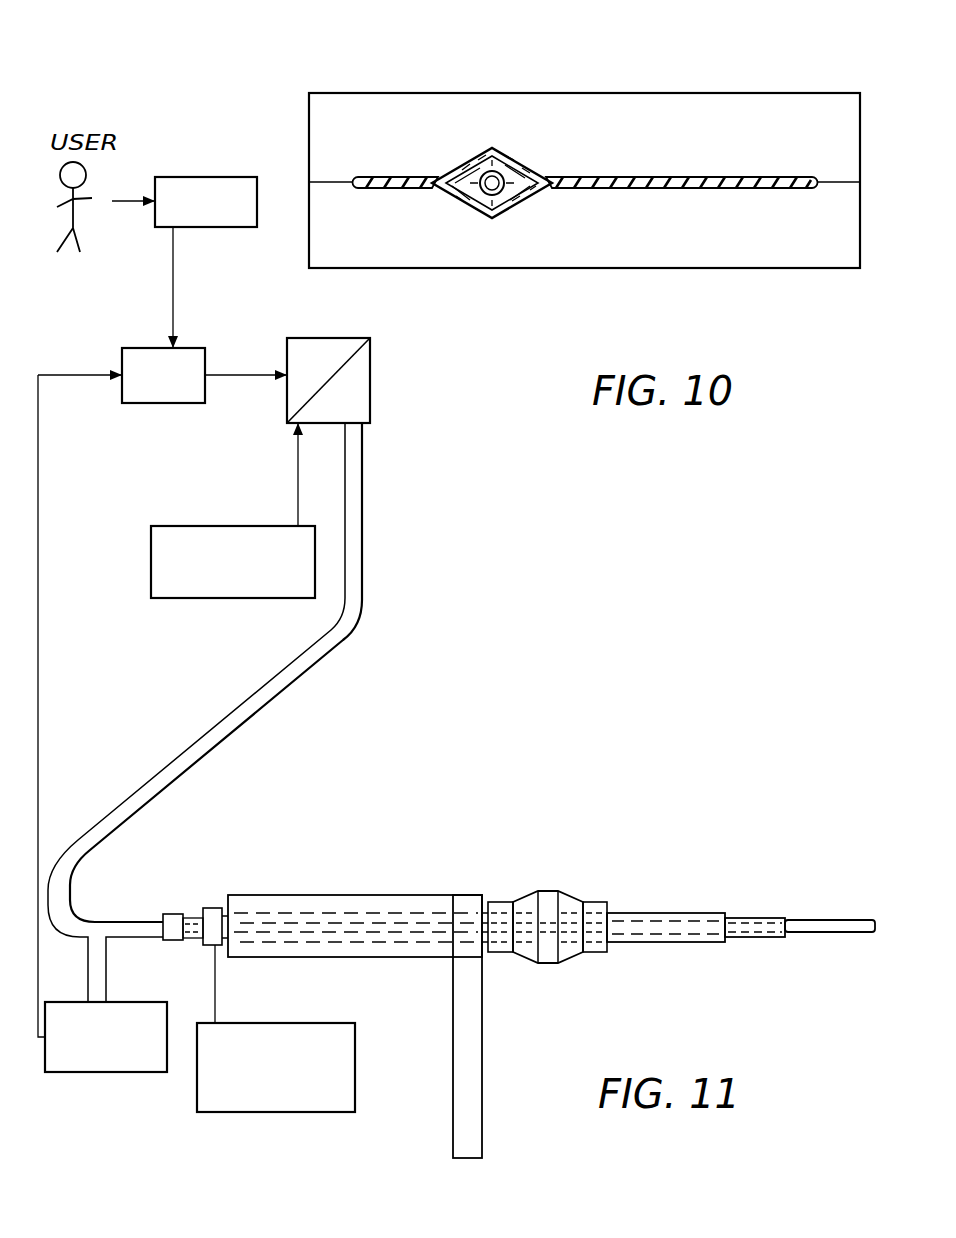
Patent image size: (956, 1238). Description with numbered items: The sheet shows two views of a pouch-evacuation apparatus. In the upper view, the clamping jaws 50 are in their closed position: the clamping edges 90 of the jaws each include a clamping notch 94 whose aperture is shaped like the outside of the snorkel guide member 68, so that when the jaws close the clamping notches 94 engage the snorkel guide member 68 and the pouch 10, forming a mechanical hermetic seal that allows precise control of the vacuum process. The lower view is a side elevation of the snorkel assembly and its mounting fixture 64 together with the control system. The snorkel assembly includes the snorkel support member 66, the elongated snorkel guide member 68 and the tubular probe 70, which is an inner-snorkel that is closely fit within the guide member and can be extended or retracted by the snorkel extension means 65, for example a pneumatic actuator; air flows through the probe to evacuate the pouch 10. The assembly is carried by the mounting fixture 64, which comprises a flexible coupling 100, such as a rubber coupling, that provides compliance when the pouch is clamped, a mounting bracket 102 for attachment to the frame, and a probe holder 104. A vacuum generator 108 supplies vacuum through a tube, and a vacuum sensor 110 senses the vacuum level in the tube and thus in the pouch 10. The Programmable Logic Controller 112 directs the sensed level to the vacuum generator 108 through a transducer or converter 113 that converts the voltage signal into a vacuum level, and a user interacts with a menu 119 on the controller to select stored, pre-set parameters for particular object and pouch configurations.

In FIG. 10, the pouch 10 is at (716, 178).
In FIG. 10, the clamping jaws 50 is at (758, 93).
In FIG. 10, the clamping edges 90 is at (332, 183).
In FIG. 10, the clamping notch 94 is at (487, 157).
In FIG. 10, the snorkel guide member 68 is at (513, 160).
In FIG. 11, the snorkel guide member 68 is at (740, 918).
In FIG. 10, the probe 70 is at (478, 210).
In FIG. 11, the probe 70 is at (820, 920).
In FIG. 11, the menu 119 is at (210, 177).
In FIG. 11, the Programmable Logic Controller (PLC) 112 is at (147, 404).
In FIG. 11, the transducer or converter 113 is at (287, 418).
In FIG. 11, the vacuum generator 108 is at (195, 526).
In FIG. 11, the vacuum sensor 110 is at (100, 1073).
In FIG. 11, the snorkel extension means 65 is at (268, 1112).
In FIG. 11, the mounting fixture 64 is at (408, 854).
In FIG. 11, the mounting bracket 102 is at (453, 1122).
In FIG. 11, the probe holder 104 is at (525, 908).
In FIG. 11, the flexible coupling 100 is at (548, 963).
In FIG. 11, the snorkel support member 66 is at (668, 945).